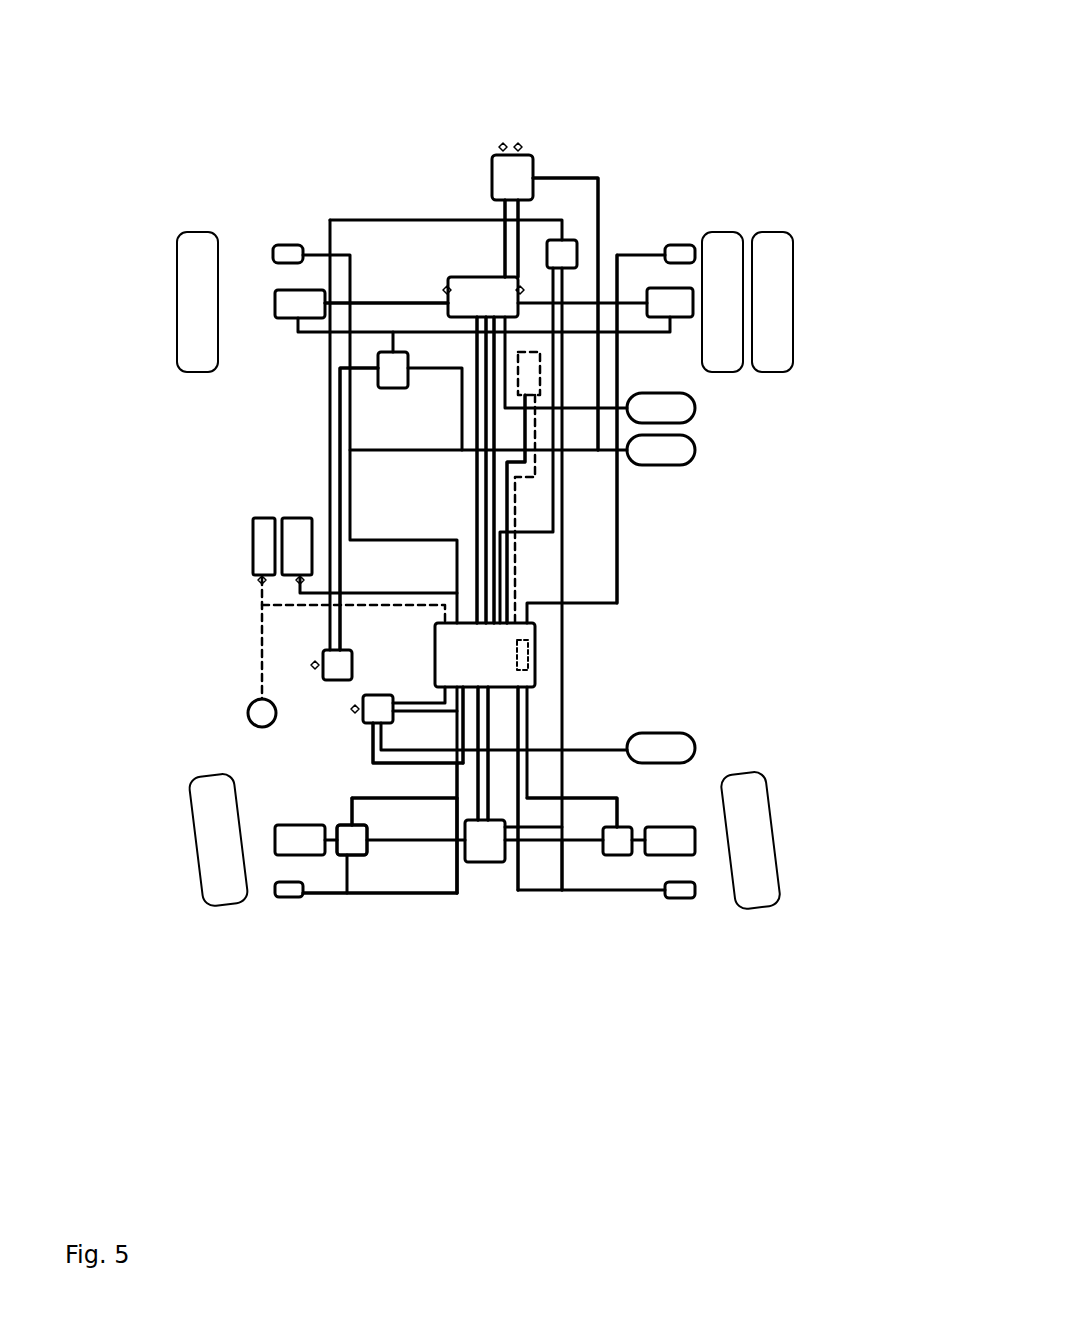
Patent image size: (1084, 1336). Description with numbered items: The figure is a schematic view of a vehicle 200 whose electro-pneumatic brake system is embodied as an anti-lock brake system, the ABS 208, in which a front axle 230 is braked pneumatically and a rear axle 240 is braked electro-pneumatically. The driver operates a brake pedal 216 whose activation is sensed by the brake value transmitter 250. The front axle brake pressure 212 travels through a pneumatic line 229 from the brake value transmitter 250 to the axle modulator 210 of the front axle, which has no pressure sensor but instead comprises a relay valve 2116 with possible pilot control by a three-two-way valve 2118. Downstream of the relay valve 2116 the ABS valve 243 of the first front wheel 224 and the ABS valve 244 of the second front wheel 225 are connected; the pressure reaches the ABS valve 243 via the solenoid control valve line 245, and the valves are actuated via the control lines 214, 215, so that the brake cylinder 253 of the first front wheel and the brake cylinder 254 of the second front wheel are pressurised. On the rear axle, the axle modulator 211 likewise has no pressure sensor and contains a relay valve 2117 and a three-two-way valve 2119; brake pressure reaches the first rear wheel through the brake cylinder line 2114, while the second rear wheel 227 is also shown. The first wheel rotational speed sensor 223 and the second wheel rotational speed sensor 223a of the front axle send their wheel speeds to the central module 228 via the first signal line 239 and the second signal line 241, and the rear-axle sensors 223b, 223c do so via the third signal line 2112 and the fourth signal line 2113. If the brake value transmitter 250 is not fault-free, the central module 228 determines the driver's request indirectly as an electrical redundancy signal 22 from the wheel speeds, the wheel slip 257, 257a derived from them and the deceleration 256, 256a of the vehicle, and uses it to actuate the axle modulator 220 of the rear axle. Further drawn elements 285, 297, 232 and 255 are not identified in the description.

The electrical redundancy signal 22 is at (200, 232).
The first wheel rotational speed sensor of the rear axle 223b is at (290, 245).
The brake cylinder line of the first rear wheel 2114 is at (367, 303).
The anti-lock brake system (ABS) 208 is at (385, 92).
The relay valve of the axle modulator of the rear axle 2117 is at (448, 277).
The axle modulator of the rear axle 211 is at (522, 143).
The wheel slip of the rear axle 257a is at (543, 112).
The axle modulator of the rear axle 220 is at (522, 288).
The second wheel rotational speed sensor of the rear axle 223c is at (680, 245).
The second rear wheel 227 is at (770, 232).
The deceleration of the rear axle 256a is at (908, 55).
The deceleration of the front axle 256 is at (693, 303).
The 3/2-way valve of the axle modulator of the rear axle 2119 is at (518, 314).
The rear axle 240 is at (715, 402).
The fourth wheel rotational speed sensor signal line 2113 is at (617, 490).
The signal lines 285 is at (505, 585).
The central module 228 is at (525, 645).
The front axle brake pressure 212 is at (537, 685).
The signal line 297 is at (508, 720).
The 3/2-way valve of the axle modulator of the front axle 2118 is at (507, 825).
The front axle 230 is at (726, 745).
The control line of the solenoid control valve of the first front wheel 214 is at (618, 808).
The second front wheel 225 is at (770, 830).
The brake cylinder of the second front wheel 254 is at (695, 840).
The second wheel rotational speed sensor of the front axle 223a is at (695, 890).
The ABS valve of the second front wheel 244 is at (617, 857).
The second wheel rotational speed sensor signal line 241 is at (585, 860).
The hydraulic line 232 is at (505, 865).
The wheel slip of the front axle 257 is at (490, 865).
The axle modulator of the front axle 210 is at (466, 865).
The relay valve of the axle modulator of the front axle 2116 is at (475, 865).
The first wheel rotational speed sensor signal line 239 is at (400, 765).
The ABS valve of the first front wheel 243 is at (385, 845).
The solenoid control valve line of the first front wheel 245 is at (388, 860).
The first wheel rotational speed sensor of the front axle 223 is at (290, 900).
The first front wheel 224 is at (222, 905).
The control line of the solenoid control valve of the second front wheel 215 is at (417, 798).
The vehicle 200 is at (612, 1110).
The brake actuator 255 is at (293, 320).
The third wheel rotational speed sensor signal line 2112 is at (350, 420).
The brake value transmitter 250 is at (258, 592).
The brake pedal 216 is at (315, 663).
The pneumatic line 229 is at (353, 707).
The brake cylinder of the first front wheel 253 is at (275, 840).